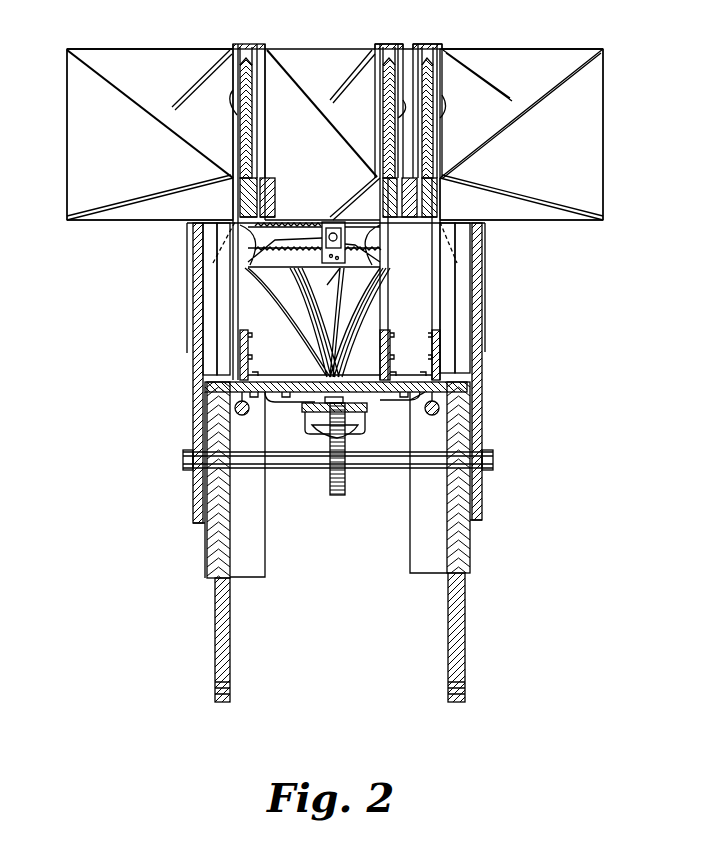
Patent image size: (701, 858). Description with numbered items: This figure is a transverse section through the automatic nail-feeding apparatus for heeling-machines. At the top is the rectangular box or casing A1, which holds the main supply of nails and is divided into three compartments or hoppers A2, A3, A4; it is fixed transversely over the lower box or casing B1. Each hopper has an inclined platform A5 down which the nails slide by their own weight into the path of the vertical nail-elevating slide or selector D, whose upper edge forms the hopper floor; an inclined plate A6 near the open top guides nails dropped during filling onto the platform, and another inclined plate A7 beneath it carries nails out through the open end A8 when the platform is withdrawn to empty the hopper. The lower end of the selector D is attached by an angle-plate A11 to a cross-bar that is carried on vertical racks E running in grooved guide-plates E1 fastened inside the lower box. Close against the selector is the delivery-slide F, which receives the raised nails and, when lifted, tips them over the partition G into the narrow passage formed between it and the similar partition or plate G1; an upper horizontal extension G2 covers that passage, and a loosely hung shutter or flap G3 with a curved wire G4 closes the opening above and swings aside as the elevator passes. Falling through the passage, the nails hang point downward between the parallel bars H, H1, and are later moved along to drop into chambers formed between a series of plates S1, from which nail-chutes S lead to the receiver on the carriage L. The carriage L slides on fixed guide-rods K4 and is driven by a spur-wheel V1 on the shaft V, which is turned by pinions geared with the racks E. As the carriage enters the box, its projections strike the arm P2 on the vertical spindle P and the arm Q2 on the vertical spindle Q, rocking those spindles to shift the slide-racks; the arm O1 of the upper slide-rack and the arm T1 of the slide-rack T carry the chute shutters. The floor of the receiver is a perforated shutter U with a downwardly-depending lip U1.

The rectangular box or casing A1 is at (160, 48).
The hopper compartment A2 is at (150, 134).
The hopper compartment A3 is at (287, 134).
The hopper compartment A4 is at (521, 134).
The inclined platform A5 is at (120, 90).
The inclined plate A6 is at (205, 80).
The inclined plate A7 is at (115, 210).
The open end of box A8 is at (67, 135).
The angle-plate A11 is at (250, 350).
The delivery-slide F is at (240, 62).
The partition G is at (262, 47).
The partition or plate G1 is at (264, 112).
The upper horizontal extension G2 is at (246, 45).
The shutter or flap G3 is at (236, 92).
The curved wire G4 is at (236, 120).
The bar H is at (260, 180).
The bar H1 is at (276, 202).
The nail-elevating slide or selector D is at (232, 200).
The box or casing B1 is at (192, 268).
The vertical spindle P is at (200, 322).
The vertical spindle Q is at (470, 312).
The nail-chutes S is at (338, 322).
The plates S1 is at (332, 246).
The slide-rack T is at (345, 268).
The arm T1 is at (345, 244).
The arm O1 is at (300, 226).
The arm P2 is at (297, 400).
The slide or carriage L is at (367, 408).
The shutter U is at (307, 425).
The downwardly-depending lip U1 is at (358, 430).
The shaft V is at (293, 468).
The spur-wheel V1 is at (340, 498).
The fixed shafts or guide-rods K4 is at (242, 415).
The arm Q2 is at (415, 402).
The grooved guide-plates E1 is at (207, 540).
The vertical rack E is at (230, 622).